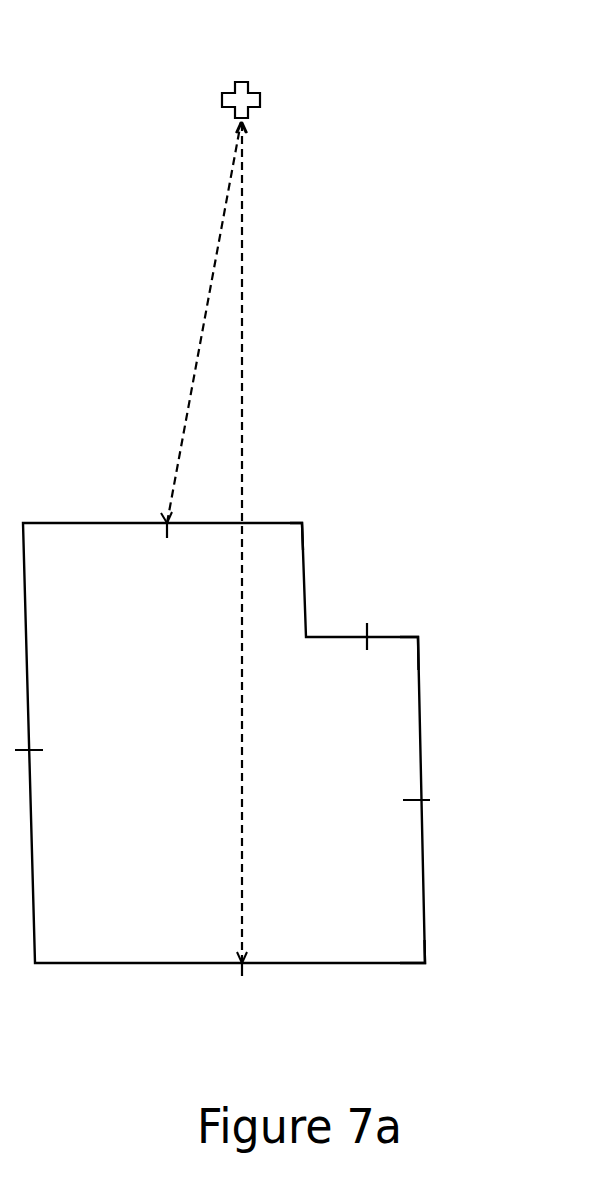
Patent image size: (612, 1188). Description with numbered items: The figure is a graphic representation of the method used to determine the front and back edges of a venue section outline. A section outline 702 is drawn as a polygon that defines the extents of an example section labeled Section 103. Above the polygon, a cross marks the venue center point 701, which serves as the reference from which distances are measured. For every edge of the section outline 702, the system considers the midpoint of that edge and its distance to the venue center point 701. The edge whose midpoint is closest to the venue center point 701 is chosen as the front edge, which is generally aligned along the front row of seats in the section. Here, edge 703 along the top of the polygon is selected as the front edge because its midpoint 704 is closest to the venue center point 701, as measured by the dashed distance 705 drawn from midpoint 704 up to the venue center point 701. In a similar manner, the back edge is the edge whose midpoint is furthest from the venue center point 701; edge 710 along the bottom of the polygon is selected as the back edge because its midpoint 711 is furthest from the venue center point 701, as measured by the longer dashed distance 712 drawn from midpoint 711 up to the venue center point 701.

The Section 103 is at (222, 743).
The venue center point 701 is at (258, 101).
The section outline 702 is at (417, 662).
The front edge 703 is at (278, 524).
The midpoint 704 is at (166, 522).
The distance 705 is at (205, 312).
The back edge 710 is at (425, 962).
The midpoint 711 is at (245, 963).
The distance 712 is at (243, 363).